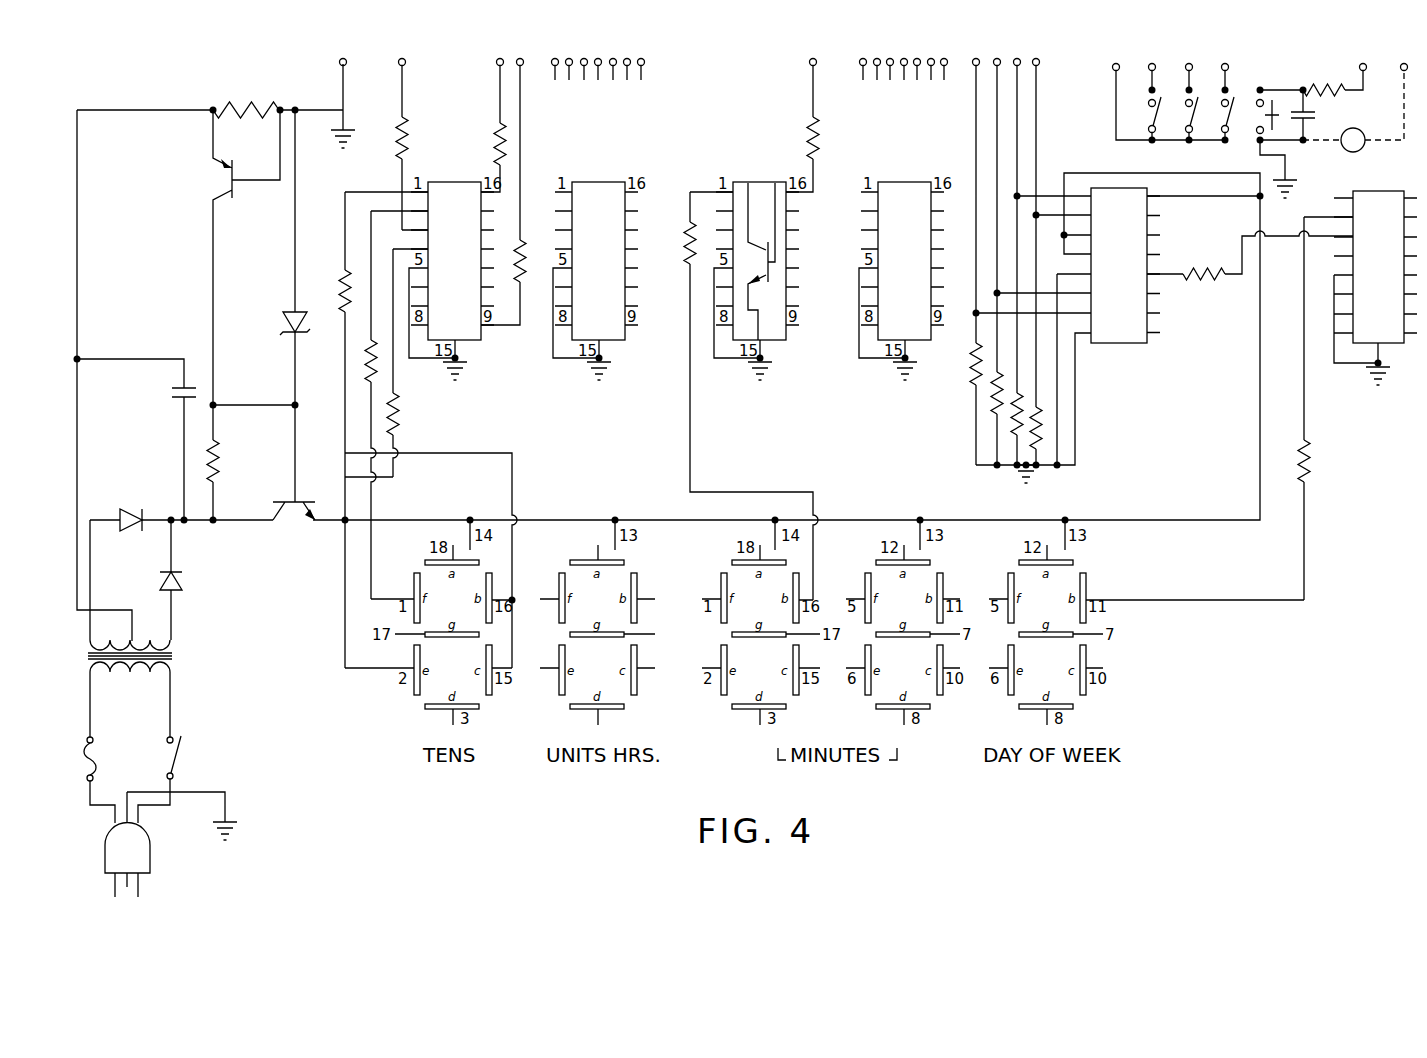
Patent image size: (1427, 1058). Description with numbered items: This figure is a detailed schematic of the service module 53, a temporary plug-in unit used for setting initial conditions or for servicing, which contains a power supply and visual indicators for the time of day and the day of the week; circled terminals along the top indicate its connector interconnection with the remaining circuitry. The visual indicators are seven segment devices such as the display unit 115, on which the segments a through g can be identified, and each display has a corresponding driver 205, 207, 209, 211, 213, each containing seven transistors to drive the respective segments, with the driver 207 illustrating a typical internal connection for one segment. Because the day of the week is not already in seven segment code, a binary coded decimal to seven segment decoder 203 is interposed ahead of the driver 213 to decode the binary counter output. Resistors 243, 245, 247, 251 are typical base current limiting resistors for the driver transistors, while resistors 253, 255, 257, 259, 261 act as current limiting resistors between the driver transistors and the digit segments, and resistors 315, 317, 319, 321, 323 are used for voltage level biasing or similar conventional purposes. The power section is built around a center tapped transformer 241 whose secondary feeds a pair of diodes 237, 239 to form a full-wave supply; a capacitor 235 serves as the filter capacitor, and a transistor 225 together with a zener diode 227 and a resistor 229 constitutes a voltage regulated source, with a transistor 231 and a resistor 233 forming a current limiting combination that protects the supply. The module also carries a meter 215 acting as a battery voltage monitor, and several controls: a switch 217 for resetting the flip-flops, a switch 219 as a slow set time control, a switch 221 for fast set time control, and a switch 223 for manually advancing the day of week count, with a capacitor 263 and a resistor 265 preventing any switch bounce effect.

The service module 53 is at (1360, 543).
The display unit 115 is at (1108, 569).
The binary coded decimal to seven segment decoder 203 is at (1133, 350).
The driver 205 is at (480, 344).
The driver 207 is at (615, 344).
The driver 209 is at (775, 344).
The driver 211 is at (920, 344).
The driver 213 is at (1389, 346).
The meter 215 is at (1361, 152).
The switch 217 is at (1160, 98).
The switch 219 is at (1198, 100).
The switch 221 is at (1237, 98).
The switch 223 is at (1276, 100).
The transistor 225 is at (294, 523).
The zener diode 227 is at (285, 326).
The resistor 229 is at (222, 463).
The transistor 231 is at (222, 181).
The resistor 233 is at (248, 104).
The capacitor 235 is at (172, 398).
The diode 237 is at (133, 509).
The diode 239 is at (182, 580).
The center tapped transformer 241 is at (178, 656).
The resistor 243 is at (408, 121).
The resistor 245 is at (500, 141).
The resistor 247 is at (820, 136).
The resistor 251 is at (1201, 278).
The resistor 253 is at (340, 291).
The resistor 255 is at (376, 370).
The resistor 257 is at (399, 419).
The resistor 259 is at (686, 246).
The resistor 261 is at (1308, 461).
The capacitor 263 is at (1318, 117).
The resistor 265 is at (1333, 88).
The resistor 315 is at (519, 251).
The resistor 317 is at (972, 378).
The resistor 319 is at (991, 390).
The resistor 321 is at (1012, 411).
The resistor 323 is at (1030, 432).